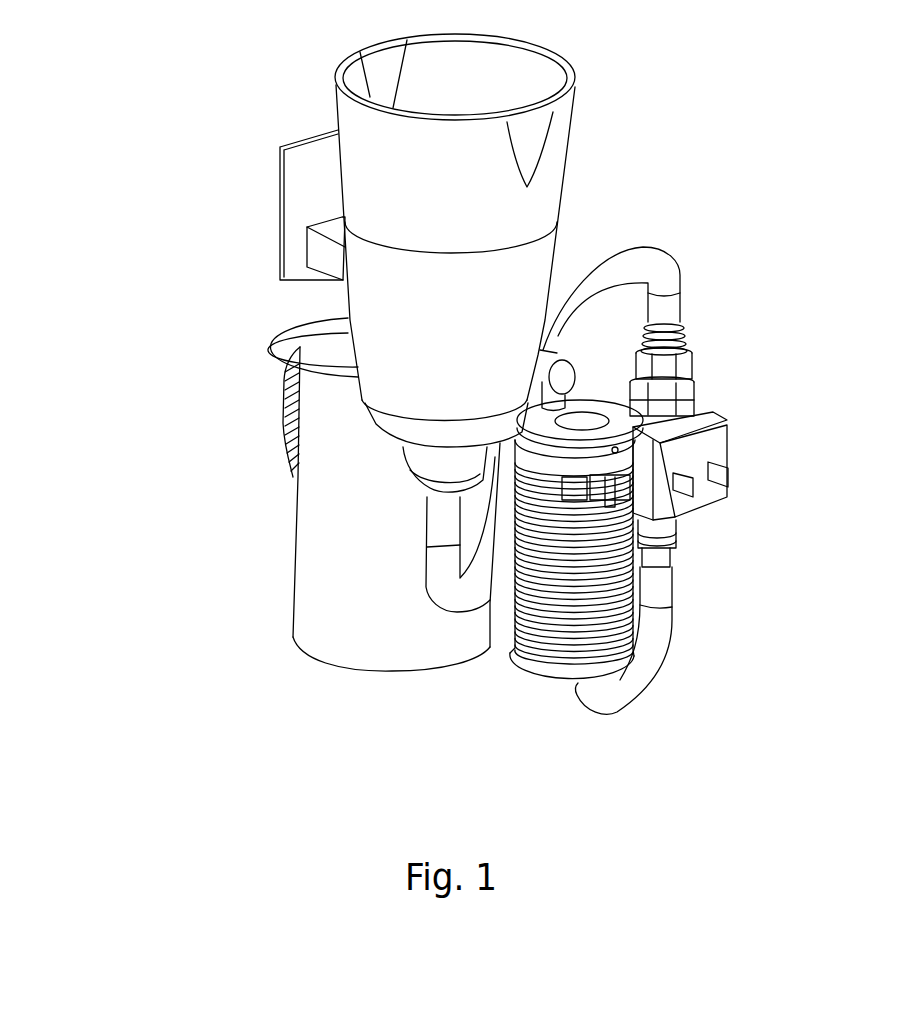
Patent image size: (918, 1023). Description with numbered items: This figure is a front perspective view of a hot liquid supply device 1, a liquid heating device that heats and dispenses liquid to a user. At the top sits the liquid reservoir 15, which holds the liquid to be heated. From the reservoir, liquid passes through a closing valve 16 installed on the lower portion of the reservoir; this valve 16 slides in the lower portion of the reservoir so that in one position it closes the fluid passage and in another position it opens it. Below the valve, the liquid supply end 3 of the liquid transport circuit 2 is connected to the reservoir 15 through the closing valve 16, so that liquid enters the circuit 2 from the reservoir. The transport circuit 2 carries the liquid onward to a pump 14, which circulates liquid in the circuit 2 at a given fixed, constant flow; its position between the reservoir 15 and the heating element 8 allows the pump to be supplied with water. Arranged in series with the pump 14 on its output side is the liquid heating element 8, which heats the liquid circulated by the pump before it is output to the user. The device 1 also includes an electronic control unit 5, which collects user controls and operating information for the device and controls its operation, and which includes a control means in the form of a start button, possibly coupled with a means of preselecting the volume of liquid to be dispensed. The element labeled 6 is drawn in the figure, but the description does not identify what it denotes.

The hot liquid supply device 1 is at (196, 84).
The liquid transport circuit 2 is at (611, 272).
The liquid supply end 3 is at (447, 533).
The electronic control unit 5 is at (315, 178).
The container 6 is at (347, 468).
The liquid heating element 8 is at (620, 664).
The pump 14 is at (692, 417).
The liquid reservoir 15 is at (508, 75).
The closing valve 16 is at (443, 458).